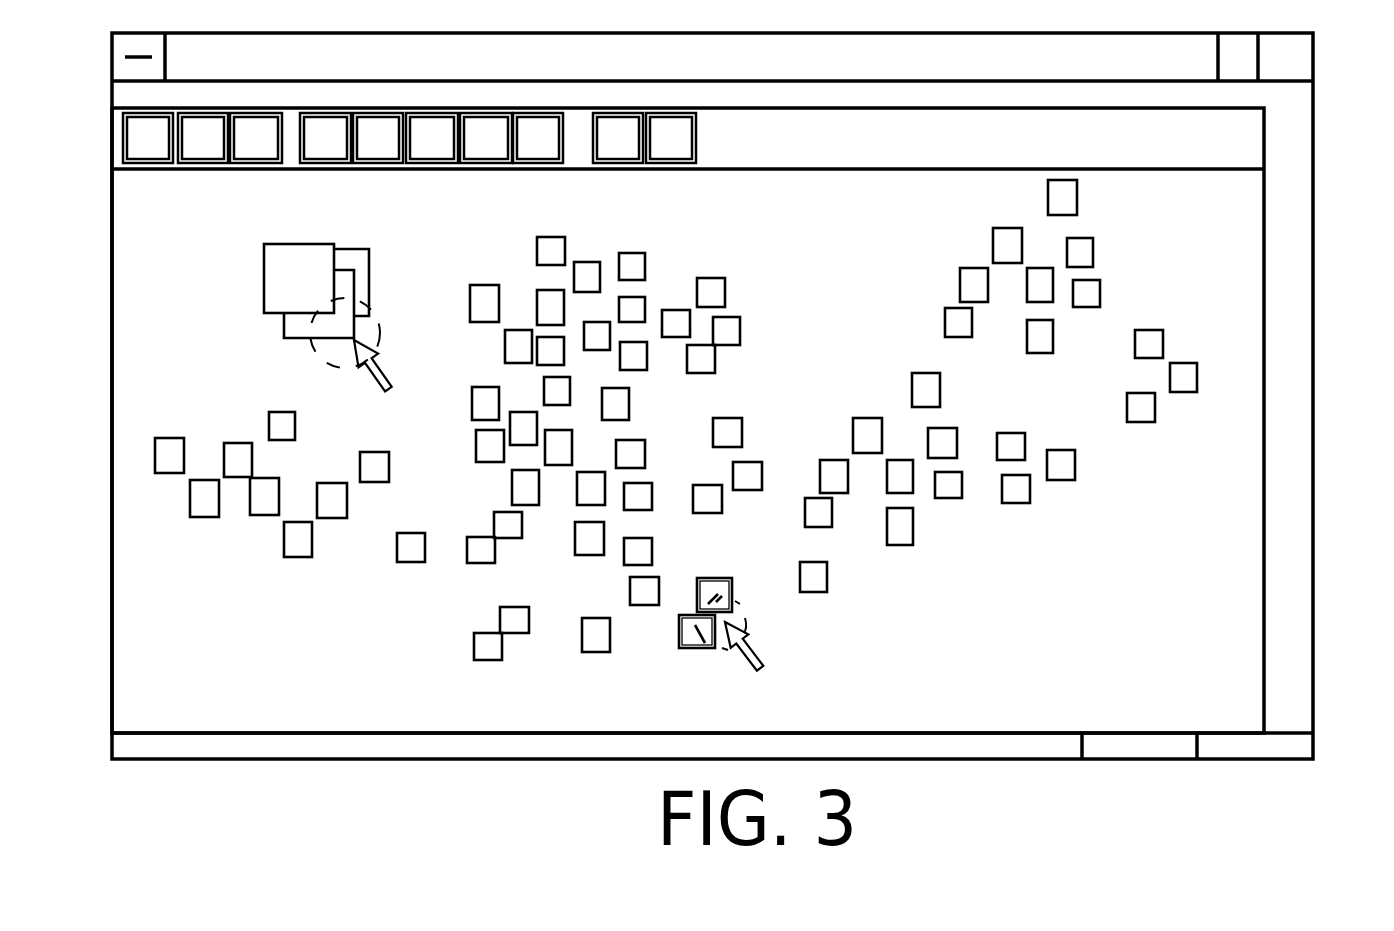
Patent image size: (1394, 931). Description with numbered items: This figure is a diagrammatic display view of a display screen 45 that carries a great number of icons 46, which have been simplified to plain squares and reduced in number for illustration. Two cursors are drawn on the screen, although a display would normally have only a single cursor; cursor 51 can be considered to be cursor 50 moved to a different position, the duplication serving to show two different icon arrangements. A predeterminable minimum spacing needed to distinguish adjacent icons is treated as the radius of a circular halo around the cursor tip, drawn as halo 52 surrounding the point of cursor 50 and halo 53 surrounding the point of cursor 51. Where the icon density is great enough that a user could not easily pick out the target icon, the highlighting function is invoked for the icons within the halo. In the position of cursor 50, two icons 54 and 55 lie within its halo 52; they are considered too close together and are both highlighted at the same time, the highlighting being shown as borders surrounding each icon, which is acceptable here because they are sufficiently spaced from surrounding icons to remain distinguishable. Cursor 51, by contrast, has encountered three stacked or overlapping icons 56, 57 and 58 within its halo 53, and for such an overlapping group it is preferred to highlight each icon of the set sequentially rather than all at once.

The display window 45 is at (1223, 252).
The icons 46 is at (636, 267).
The cursor 50 is at (758, 652).
The cursor 51 is at (379, 355).
The halo 52 is at (736, 618).
The halo 53 is at (385, 336).
The icon 54 is at (715, 580).
The icon 55 is at (681, 650).
The icon 56 is at (347, 249).
The icon 57 is at (354, 272).
The icon 58 is at (279, 277).